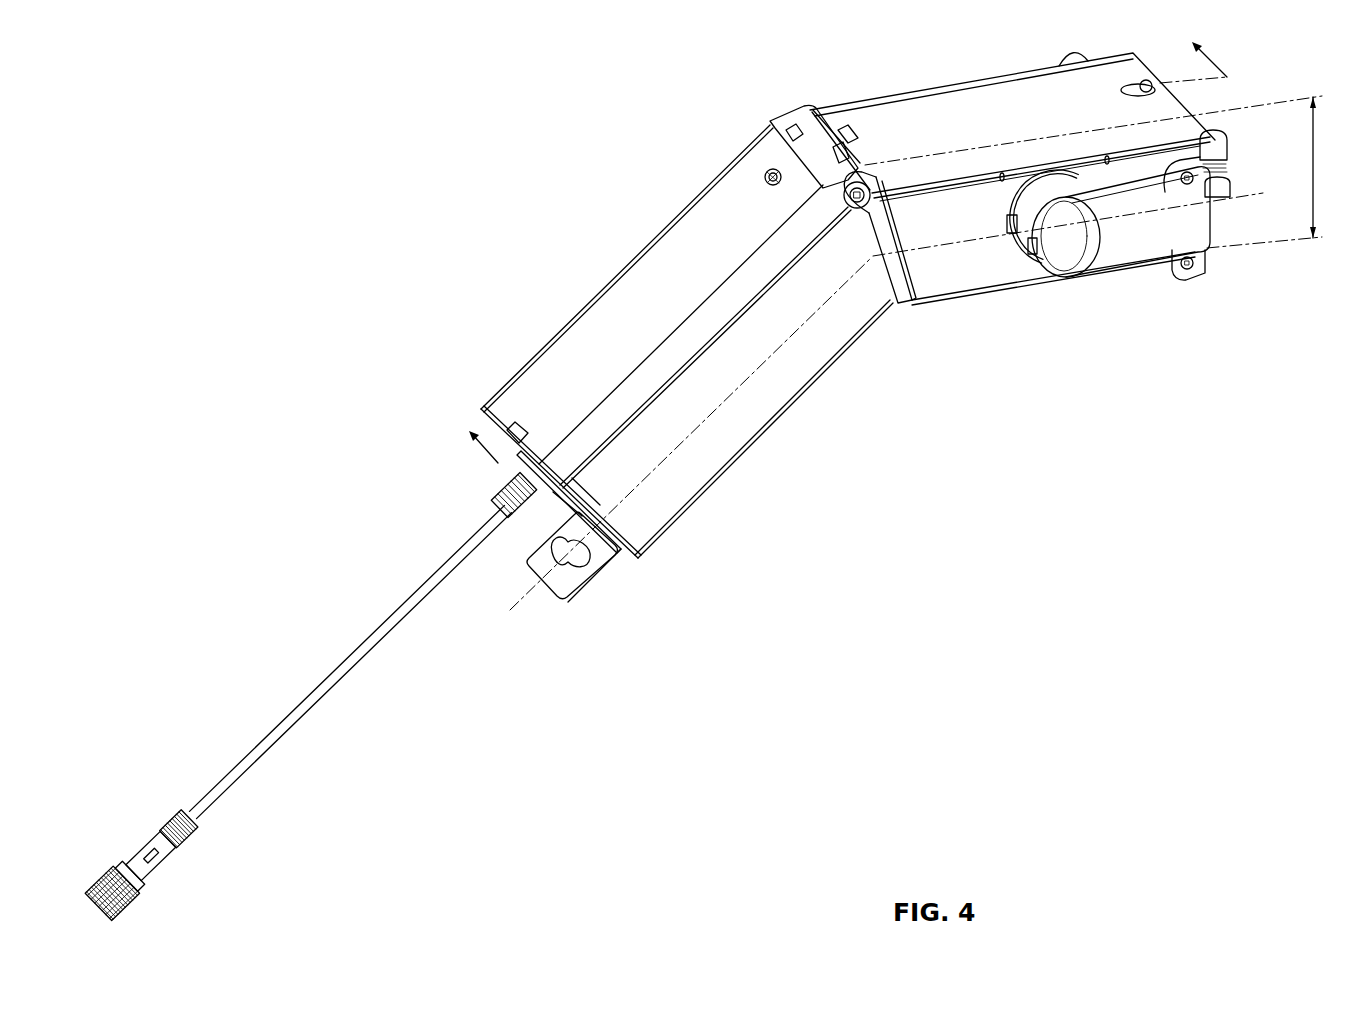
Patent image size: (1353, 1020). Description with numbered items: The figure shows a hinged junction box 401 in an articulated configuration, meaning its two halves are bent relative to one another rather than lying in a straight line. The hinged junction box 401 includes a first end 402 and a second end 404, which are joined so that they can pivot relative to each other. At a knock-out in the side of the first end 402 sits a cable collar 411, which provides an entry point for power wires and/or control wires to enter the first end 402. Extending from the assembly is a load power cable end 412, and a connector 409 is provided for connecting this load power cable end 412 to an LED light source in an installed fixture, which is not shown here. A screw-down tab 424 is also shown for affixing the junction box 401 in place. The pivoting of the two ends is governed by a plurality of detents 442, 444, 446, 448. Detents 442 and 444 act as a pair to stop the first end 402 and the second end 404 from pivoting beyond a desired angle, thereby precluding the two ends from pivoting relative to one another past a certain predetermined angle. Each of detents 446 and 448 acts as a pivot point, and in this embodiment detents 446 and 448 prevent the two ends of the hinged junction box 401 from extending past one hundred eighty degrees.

The hinged junction box 401 is at (368, 142).
The first end 402 is at (1003, 292).
The second end 404 is at (752, 440).
The connector 409 is at (134, 902).
The cable collar 411 is at (1212, 217).
The load power cable end 412 is at (510, 483).
The screw-down tab 424 is at (568, 598).
The detent 442 is at (870, 270).
The detent 444 is at (900, 300).
The detent 446 is at (768, 119).
The detent 448 is at (862, 158).